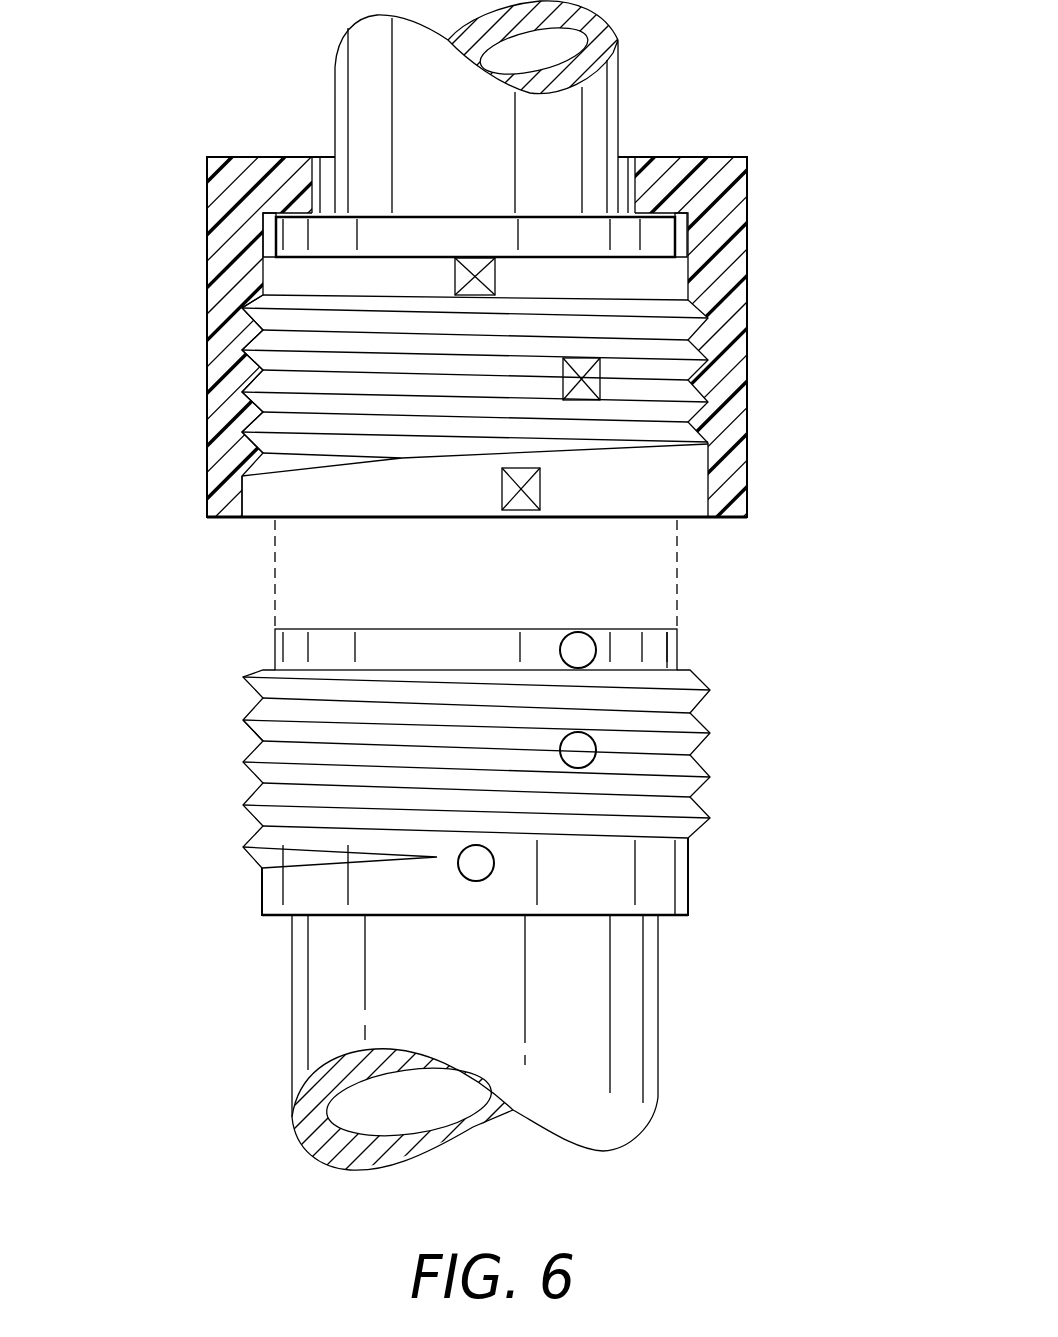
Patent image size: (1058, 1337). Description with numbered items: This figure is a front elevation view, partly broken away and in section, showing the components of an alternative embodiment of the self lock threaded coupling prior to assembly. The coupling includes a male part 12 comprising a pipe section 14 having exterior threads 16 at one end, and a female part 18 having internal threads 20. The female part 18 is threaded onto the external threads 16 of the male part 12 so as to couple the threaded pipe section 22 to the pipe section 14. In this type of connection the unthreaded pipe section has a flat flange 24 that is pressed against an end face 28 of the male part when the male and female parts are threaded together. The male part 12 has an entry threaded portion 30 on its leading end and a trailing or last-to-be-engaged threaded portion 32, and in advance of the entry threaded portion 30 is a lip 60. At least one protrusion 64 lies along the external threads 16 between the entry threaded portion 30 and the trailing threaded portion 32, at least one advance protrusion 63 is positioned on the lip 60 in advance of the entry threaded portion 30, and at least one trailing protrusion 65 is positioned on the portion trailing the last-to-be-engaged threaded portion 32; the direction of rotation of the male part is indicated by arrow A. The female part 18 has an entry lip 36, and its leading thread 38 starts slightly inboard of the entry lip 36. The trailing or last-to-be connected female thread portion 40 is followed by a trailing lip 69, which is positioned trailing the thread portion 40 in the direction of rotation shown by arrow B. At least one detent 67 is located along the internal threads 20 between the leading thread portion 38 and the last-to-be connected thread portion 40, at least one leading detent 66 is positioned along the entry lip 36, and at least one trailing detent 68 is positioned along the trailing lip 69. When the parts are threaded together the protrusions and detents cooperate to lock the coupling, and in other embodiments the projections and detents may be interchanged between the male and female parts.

The male part 12 is at (685, 888).
The pipe section 14 is at (292, 1017).
The exterior threads 16 is at (710, 690).
The female part 18 is at (747, 238).
The internal threads 20 is at (260, 410).
The threaded pipe section 22 is at (618, 103).
The flat flange 24 is at (468, 233).
The end face 28 is at (495, 630).
The entry threaded portion 30 is at (243, 722).
The trailing threaded portion 32 is at (243, 847).
The entry lip 36 is at (298, 500).
The leading thread 38 is at (343, 467).
The last-to-be connected female thread portion 40 is at (257, 310).
The lip 60 is at (673, 650).
The advance protrusion 63 is at (578, 647).
The protrusion 64 is at (596, 745).
The trailing protrusion 65 is at (477, 866).
The leading detent 66 is at (545, 491).
The detent 67 is at (600, 373).
The trailing detent 68 is at (495, 280).
The trailing lip 69 is at (258, 268).
The arrow A is at (565, 973).
The arrow B is at (207, 325).